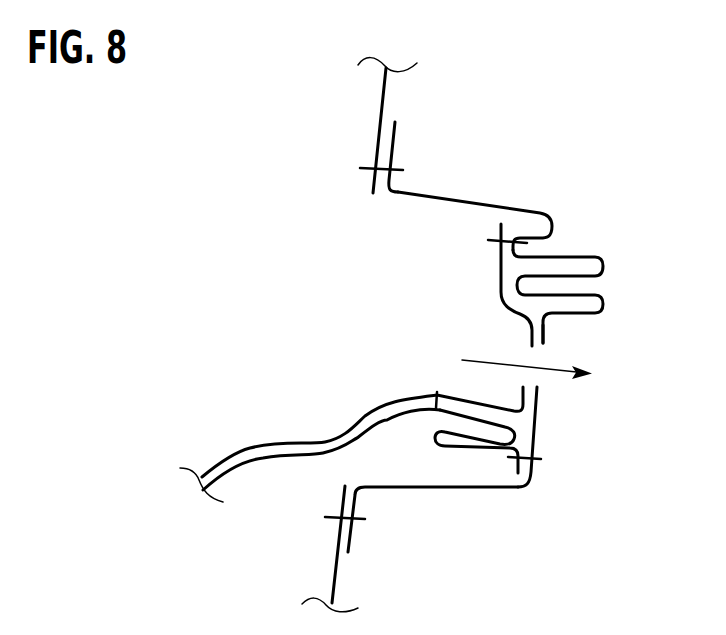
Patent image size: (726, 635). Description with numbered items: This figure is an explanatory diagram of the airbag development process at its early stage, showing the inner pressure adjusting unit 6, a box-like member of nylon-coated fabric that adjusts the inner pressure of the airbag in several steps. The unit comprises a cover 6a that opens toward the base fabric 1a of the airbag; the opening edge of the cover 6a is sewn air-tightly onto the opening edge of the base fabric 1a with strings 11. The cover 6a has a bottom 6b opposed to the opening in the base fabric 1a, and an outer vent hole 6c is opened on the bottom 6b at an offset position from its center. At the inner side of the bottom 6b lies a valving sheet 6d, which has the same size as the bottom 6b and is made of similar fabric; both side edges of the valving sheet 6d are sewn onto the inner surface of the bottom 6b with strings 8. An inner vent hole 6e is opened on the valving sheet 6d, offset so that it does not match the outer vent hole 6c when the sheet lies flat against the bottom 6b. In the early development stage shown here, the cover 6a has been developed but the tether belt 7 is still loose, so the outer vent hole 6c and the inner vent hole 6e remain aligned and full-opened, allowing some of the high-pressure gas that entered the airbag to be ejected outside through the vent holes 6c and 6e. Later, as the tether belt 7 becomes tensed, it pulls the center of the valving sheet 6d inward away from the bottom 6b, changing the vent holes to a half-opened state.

The base fabric 1a is at (380, 108).
The strings 11 is at (390, 168).
The inner pressure adjusting unit 6 is at (434, 499).
The cover 6a is at (492, 205).
The bottom 6b is at (582, 257).
The outer vent hole 6c is at (543, 353).
The valving sheet 6d is at (478, 447).
The inner vent hole 6e is at (527, 352).
The tether belt 7 is at (293, 455).
The strings 8 is at (494, 247).